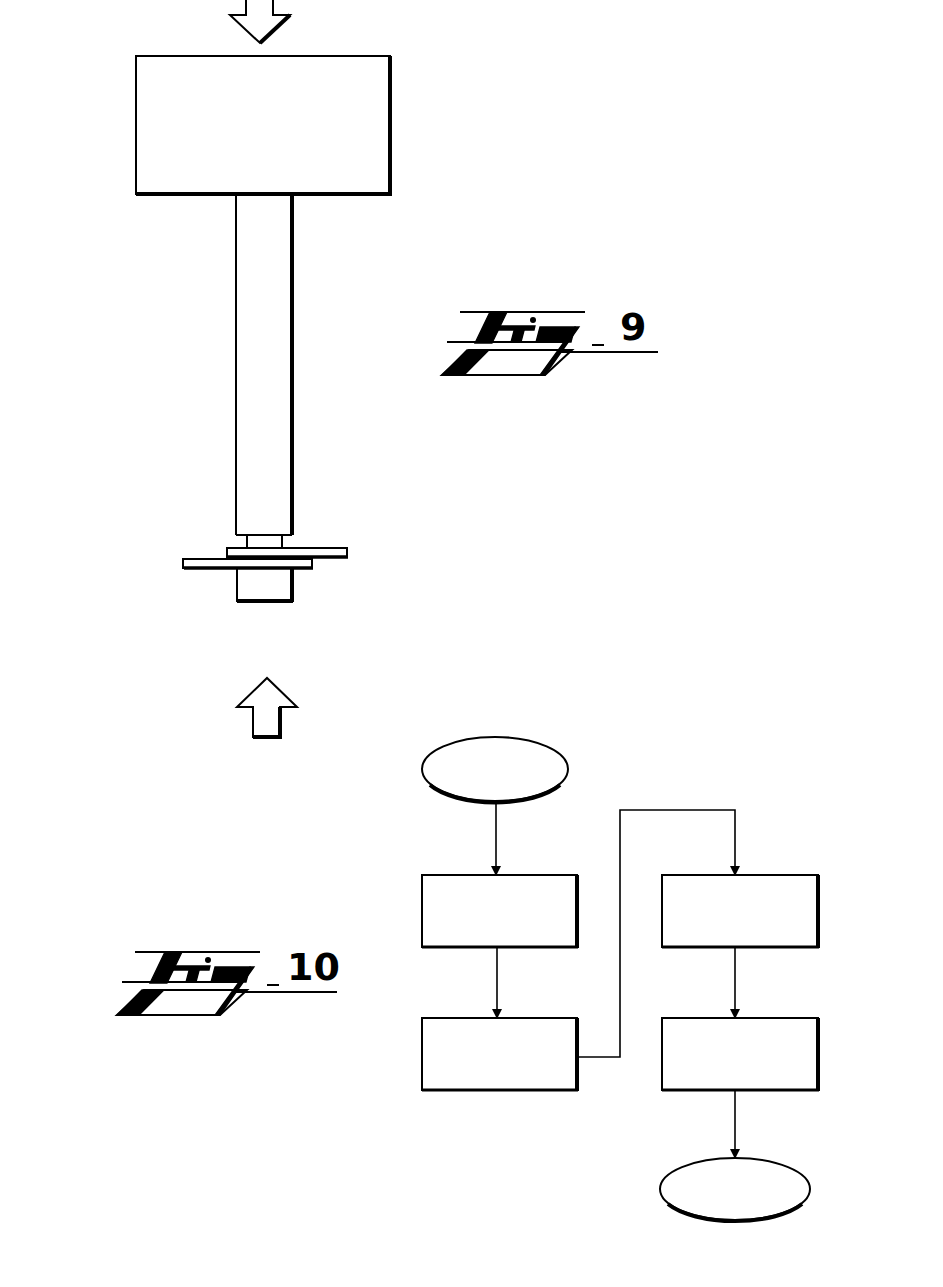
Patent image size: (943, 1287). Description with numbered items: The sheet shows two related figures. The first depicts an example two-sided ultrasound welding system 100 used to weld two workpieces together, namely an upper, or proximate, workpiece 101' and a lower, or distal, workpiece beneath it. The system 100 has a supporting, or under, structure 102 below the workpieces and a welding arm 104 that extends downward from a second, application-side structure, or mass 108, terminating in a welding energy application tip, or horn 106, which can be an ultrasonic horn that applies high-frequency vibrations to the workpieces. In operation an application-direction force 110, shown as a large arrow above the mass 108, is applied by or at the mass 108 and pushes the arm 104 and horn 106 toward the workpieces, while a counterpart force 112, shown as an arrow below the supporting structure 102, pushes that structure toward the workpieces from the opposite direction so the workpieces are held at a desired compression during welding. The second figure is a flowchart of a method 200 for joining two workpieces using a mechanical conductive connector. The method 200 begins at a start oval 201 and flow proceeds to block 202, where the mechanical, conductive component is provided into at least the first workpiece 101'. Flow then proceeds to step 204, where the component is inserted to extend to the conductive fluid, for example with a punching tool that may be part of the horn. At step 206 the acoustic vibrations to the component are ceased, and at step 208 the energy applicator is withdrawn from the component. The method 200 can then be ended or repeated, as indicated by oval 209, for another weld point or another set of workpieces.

In FIG. 9, the welding system 100 is at (510, 232).
In FIG. 9, the upper workpiece 101' is at (369, 595).
In FIG. 9, the supporting structure 102 is at (237, 587).
In FIG. 9, the welding arm 104 is at (235, 380).
In FIG. 9, the horn 106 is at (287, 543).
In FIG. 9, the mass 108 is at (135, 127).
In FIG. 9, the application-direction force 110 is at (289, 16).
In FIG. 9, the counterpart force 112 is at (253, 723).
In FIG. 10, the method 200 is at (650, 728).
In FIG. 10, the start 201 is at (495, 769).
In FIG. 10, the providing block 202 is at (500, 911).
In FIG. 10, the inserting step 204 is at (500, 1054).
In FIG. 10, the ceasing vibrations step 206 is at (740, 911).
In FIG. 10, the withdrawing step 208 is at (740, 1054).
In FIG. 10, the end oval 209 is at (735, 1189).